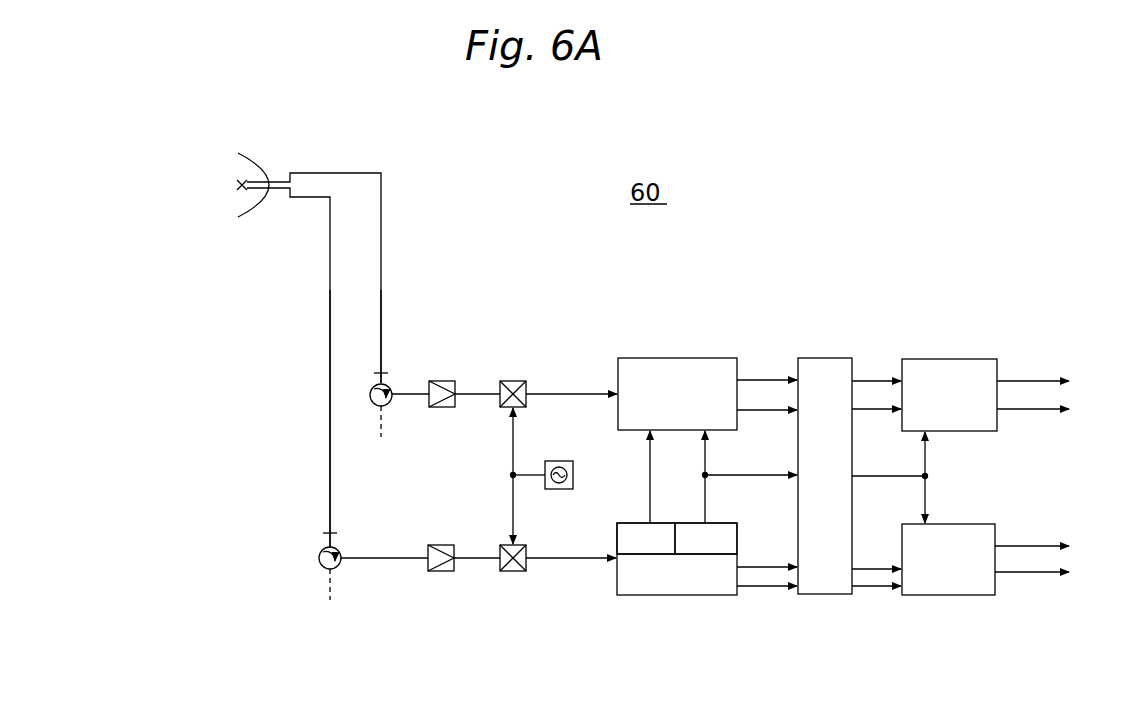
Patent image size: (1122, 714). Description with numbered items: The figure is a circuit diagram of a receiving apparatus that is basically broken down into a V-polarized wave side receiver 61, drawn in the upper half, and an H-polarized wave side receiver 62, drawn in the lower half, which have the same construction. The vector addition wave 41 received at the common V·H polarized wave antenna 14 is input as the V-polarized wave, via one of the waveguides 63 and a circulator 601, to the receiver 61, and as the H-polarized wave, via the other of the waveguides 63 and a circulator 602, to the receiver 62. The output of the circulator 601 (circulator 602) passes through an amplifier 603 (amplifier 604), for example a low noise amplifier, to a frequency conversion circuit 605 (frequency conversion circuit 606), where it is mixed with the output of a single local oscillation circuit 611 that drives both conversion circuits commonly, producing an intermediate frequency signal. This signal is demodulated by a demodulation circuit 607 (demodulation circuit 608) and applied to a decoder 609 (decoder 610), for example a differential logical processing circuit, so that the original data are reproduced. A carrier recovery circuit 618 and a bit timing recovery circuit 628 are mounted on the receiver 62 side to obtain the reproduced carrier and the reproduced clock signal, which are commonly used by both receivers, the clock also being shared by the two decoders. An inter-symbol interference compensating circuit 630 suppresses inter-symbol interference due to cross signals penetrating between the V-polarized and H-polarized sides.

The common V·H polarized wave antenna 14 is at (259, 166).
The vector addition wave 41 is at (227, 187).
The V-polarized wave side receiver 61 is at (318, 396).
The H-polarized wave side receiver 62 is at (311, 558).
The waveguides 63 is at (331, 306).
The circulator 601 is at (392, 388).
The circulator 602 is at (340, 566).
The amplifier 603 is at (442, 380).
The amplifier 604 is at (441, 572).
The frequency conversion circuit 605 is at (516, 380).
The frequency conversion circuit 606 is at (513, 572).
The demodulation circuit (DEM) 607 is at (677, 356).
The demodulation circuit (DEM) 608 is at (678, 535).
The decoder (DEC) 609 is at (955, 343).
The decoder (DEC) 610 is at (950, 596).
The local oscillation circuit 611 is at (559, 459).
The carrier recovery circuit (CR) 618 is at (616, 535).
The bit timing recovery circuit (BTR) 628 is at (737, 535).
The inter-symbol interference compensating circuit 630 is at (825, 356).